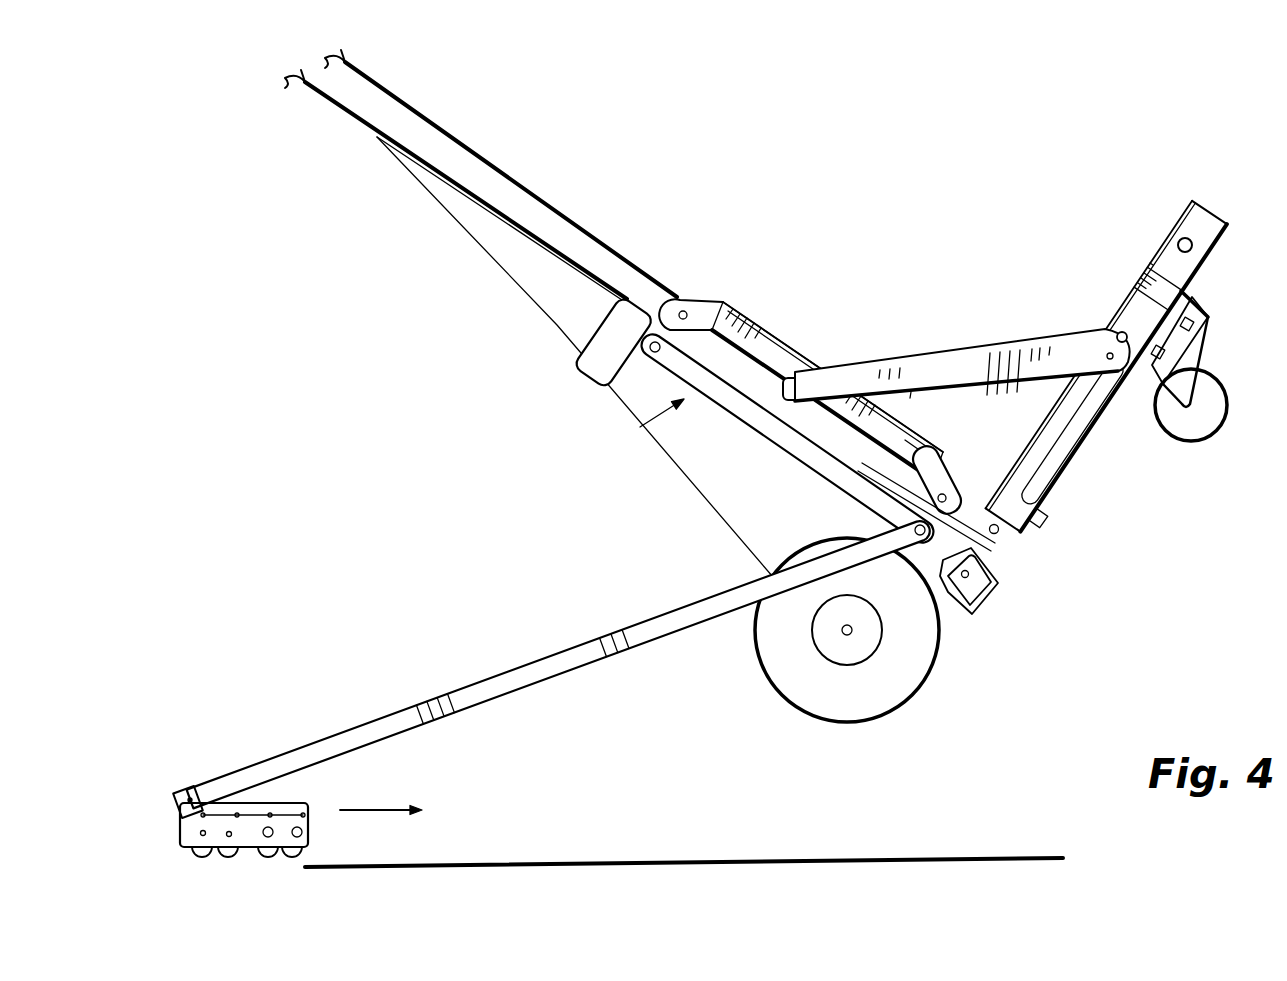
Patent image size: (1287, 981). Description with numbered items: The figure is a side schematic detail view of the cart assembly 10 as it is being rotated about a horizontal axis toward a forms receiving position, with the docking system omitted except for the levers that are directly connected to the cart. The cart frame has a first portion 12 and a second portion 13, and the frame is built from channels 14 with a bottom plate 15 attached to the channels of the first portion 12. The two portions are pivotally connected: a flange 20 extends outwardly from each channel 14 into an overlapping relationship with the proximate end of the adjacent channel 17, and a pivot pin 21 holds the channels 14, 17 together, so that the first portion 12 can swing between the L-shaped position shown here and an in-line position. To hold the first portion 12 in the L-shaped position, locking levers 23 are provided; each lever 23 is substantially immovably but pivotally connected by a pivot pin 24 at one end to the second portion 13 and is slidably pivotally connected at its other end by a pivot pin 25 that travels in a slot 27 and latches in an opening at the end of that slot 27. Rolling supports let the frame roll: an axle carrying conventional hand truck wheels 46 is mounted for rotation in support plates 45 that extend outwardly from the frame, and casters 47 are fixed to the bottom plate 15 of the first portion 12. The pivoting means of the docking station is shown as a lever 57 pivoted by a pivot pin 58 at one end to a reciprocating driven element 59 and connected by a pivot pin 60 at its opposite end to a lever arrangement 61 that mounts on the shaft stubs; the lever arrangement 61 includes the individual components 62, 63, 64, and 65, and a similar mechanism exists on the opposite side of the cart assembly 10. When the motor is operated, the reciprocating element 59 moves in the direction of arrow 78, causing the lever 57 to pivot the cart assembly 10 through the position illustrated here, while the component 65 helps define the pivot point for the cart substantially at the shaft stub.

The cart assembly 10 is at (687, 112).
The first portion 12 is at (1088, 224).
The second portion 13 is at (703, 255).
The channels 14 is at (1207, 230).
The bottom plate 15 is at (1210, 268).
The channel 17 is at (958, 500).
The flange 20 is at (1000, 531).
The pivot pin 21 is at (1000, 577).
The locking levers 23 is at (948, 378).
The pivot pin 24 is at (783, 380).
The pivot pin 25 is at (1119, 331).
The slot 27 is at (1067, 427).
The support plates 45 is at (704, 464).
The wheels 46 is at (836, 712).
The casters 47 is at (1226, 448).
The levers 57 is at (497, 680).
The pivot pin 58 is at (190, 796).
The reciprocating driven element 59 is at (250, 838).
The pivot pin 60 is at (880, 522).
The lever arrangement 61 is at (640, 427).
The component 62 is at (805, 456).
The component 63 is at (923, 422).
The component 64 is at (838, 398).
The component 65 is at (622, 331).
The arrow 78 is at (357, 809).